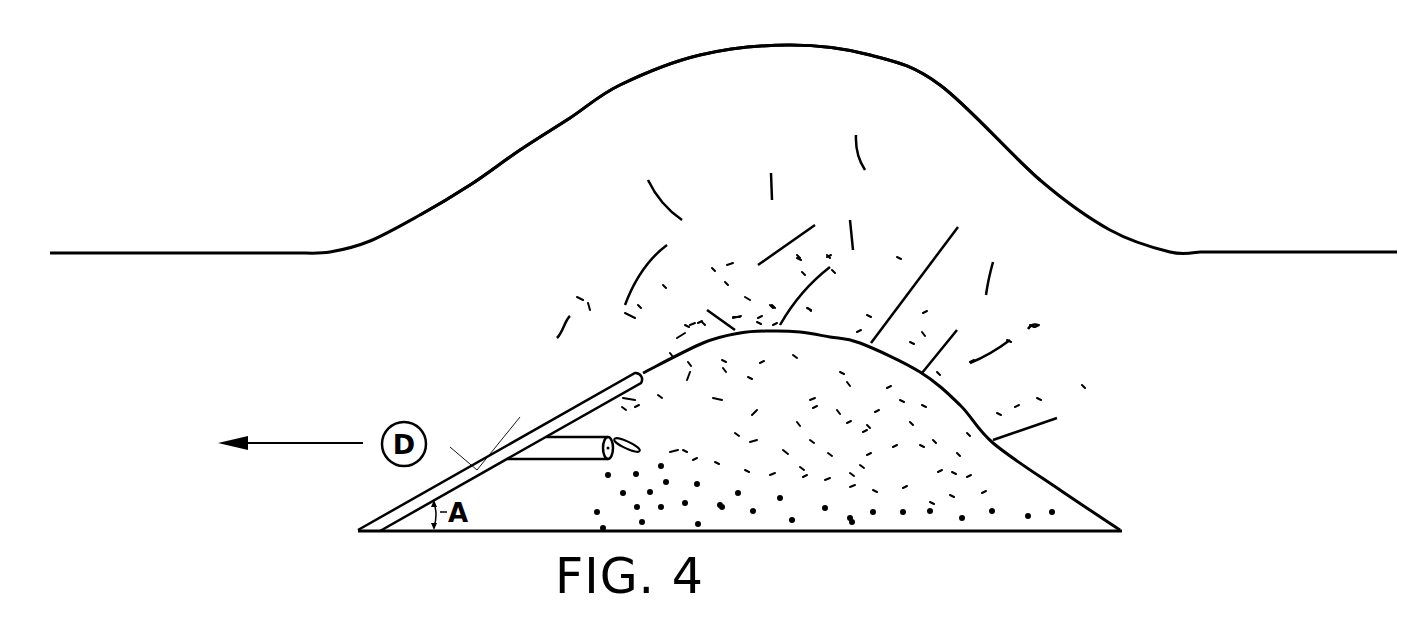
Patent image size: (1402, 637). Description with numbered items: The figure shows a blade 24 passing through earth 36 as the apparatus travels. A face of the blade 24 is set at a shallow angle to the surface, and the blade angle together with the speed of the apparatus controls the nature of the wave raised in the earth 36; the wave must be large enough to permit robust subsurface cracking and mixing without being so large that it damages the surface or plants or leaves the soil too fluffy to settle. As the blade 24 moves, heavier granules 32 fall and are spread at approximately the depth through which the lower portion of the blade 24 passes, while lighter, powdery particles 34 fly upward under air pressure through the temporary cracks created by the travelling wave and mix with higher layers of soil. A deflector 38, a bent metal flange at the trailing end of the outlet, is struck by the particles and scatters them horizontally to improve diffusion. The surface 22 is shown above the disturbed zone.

The surface layer 22 is at (257, 238).
The blade 24 is at (514, 426).
The granules 32 is at (797, 518).
The lighter granules 34 is at (858, 322).
The earth 36 is at (801, 105).
The deflector 38 is at (628, 440).